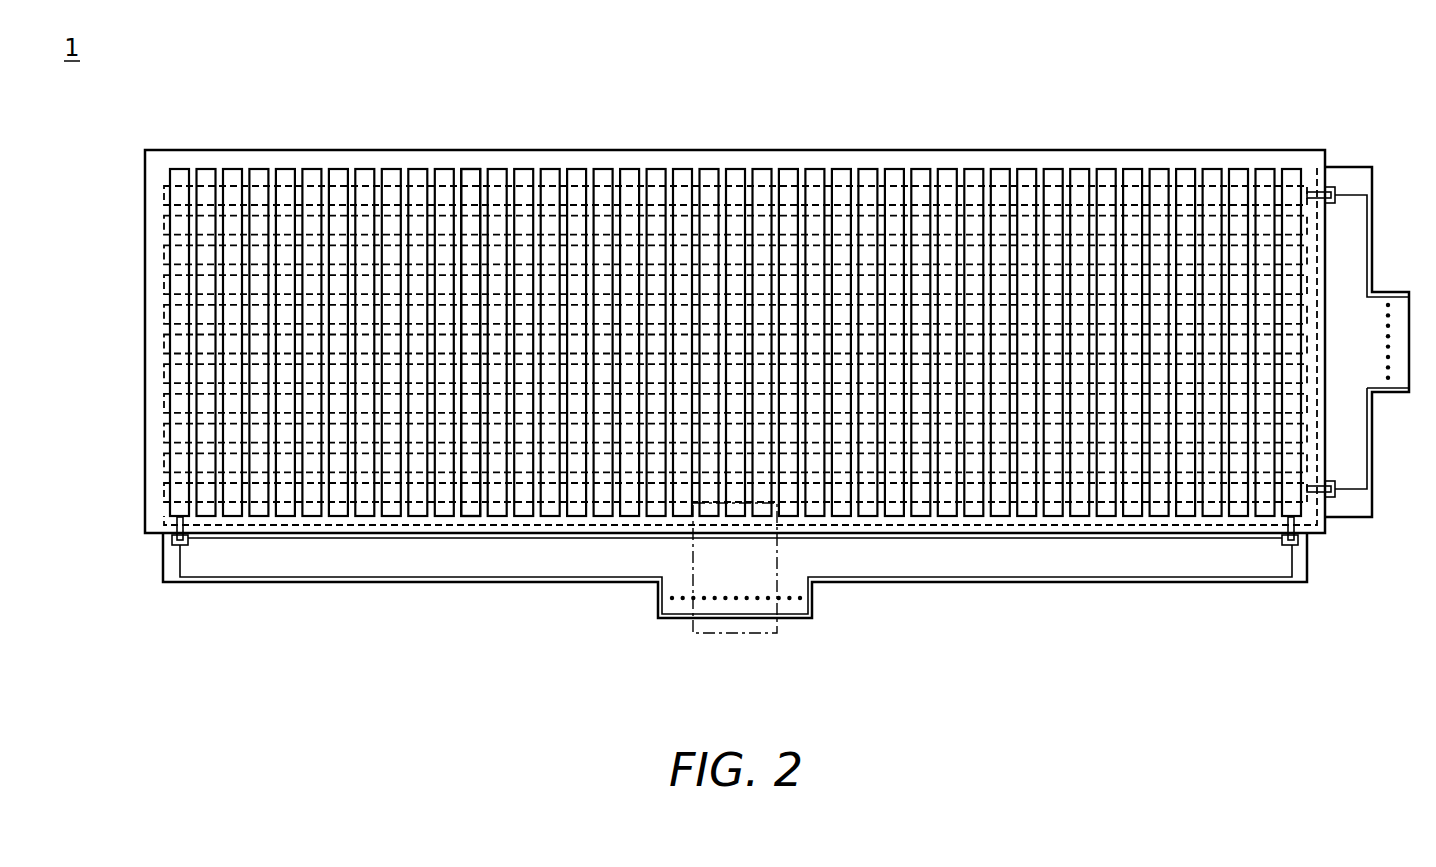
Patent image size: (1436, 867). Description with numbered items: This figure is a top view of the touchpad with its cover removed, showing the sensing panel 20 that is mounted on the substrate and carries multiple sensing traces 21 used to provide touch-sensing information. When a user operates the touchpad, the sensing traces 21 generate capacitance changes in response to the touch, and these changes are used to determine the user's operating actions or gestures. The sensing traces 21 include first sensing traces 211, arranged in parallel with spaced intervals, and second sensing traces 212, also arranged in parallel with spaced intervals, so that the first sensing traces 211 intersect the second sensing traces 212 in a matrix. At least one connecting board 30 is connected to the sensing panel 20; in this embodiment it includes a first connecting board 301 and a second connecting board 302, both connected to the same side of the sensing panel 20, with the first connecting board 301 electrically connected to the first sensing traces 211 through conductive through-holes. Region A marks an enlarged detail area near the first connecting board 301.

The sensing panel 20 is at (236, 150).
The sensing traces 21 is at (665, 150).
The first sensing traces 211 is at (472, 176).
The second sensing traces 212 is at (165, 225).
The connecting board 30 is at (645, 628).
The first connecting board 301 is at (813, 605).
The second connecting board 302 is at (1394, 292).
The region A is at (730, 634).